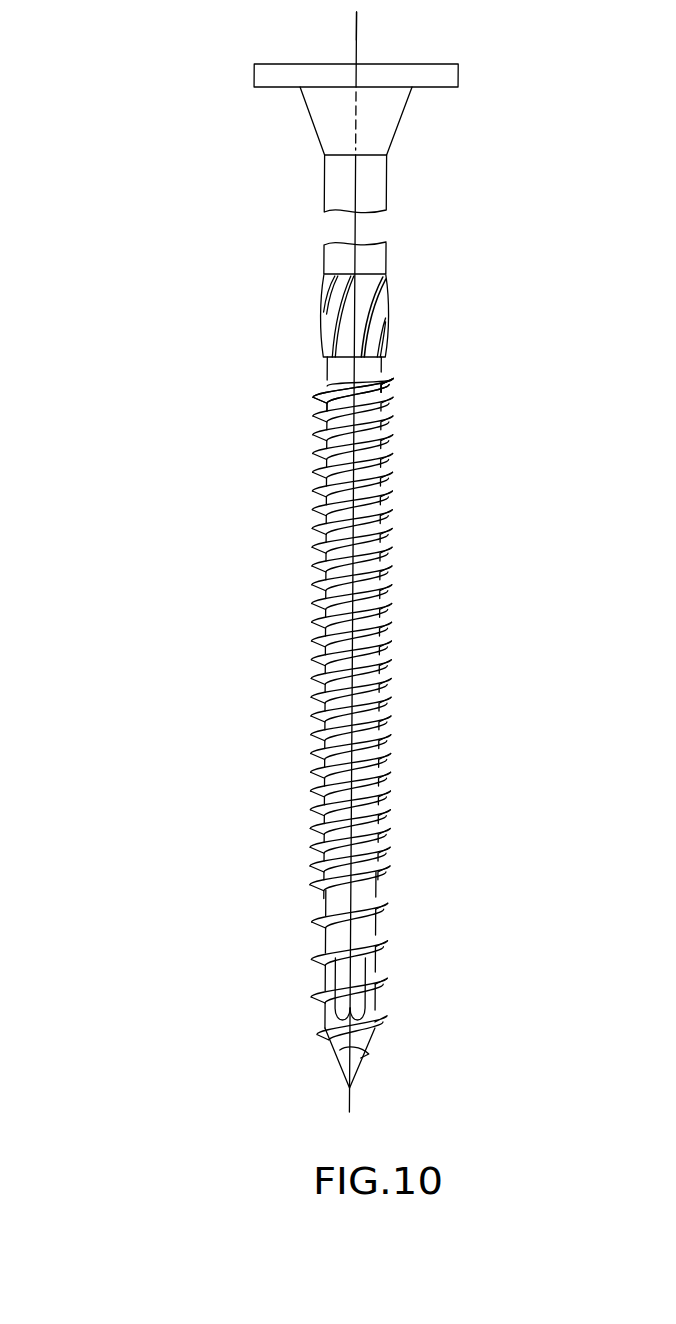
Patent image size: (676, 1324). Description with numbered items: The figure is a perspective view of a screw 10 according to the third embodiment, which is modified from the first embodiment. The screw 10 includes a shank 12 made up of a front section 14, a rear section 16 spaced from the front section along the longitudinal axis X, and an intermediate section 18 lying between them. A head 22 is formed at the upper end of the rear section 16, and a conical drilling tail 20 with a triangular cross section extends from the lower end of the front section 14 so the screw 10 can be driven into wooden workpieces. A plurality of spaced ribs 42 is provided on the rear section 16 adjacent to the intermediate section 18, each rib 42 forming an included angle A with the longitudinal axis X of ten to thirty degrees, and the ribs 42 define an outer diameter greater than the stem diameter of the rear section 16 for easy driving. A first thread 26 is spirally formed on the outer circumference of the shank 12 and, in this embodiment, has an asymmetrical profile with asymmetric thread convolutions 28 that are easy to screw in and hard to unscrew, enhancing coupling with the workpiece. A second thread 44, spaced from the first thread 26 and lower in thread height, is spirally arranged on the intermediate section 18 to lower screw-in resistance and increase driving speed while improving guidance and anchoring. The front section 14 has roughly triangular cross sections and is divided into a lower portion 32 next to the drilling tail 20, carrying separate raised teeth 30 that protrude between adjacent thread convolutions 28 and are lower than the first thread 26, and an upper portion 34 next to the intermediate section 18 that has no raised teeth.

The screw 10 is at (198, 703).
The longitudinal axis X is at (357, 22).
The head 22 is at (452, 77).
The rear section 16 is at (376, 200).
The ribs 42 is at (326, 317).
The included angle A is at (343, 308).
The first thread 26 is at (397, 486).
The shank 12 is at (316, 452).
The thread convolutions 28 is at (395, 412).
The second thread 44 is at (391, 542).
The intermediate section 18 is at (328, 757).
The front section 14 is at (337, 941).
The upper portion 34 is at (370, 887).
The lower portion 32 is at (360, 967).
The raised teeth 30 is at (333, 975).
The drilling tail 20 is at (343, 1053).